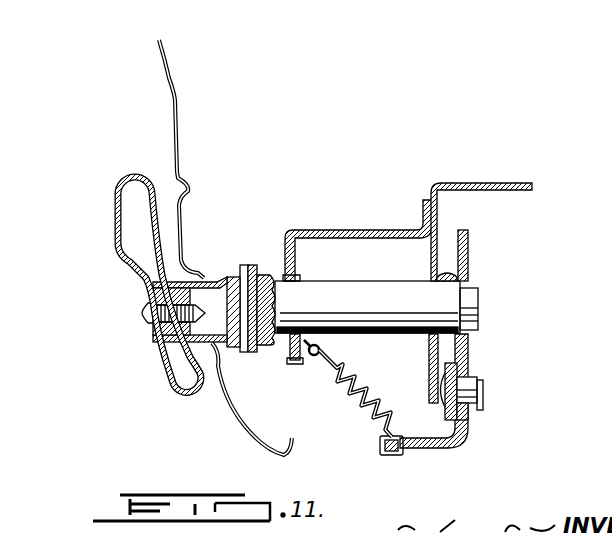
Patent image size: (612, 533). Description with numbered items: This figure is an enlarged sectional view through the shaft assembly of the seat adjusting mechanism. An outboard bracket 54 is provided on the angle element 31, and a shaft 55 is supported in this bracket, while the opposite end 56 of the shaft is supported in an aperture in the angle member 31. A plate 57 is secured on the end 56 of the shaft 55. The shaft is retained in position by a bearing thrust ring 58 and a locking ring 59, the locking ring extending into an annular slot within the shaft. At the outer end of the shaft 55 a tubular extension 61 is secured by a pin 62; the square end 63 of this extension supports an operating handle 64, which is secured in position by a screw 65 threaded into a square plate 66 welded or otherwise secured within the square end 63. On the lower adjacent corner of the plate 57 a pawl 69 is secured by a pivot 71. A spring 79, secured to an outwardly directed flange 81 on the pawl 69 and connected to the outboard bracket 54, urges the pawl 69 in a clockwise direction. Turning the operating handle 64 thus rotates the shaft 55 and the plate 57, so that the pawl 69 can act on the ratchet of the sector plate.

The angle element 31 is at (433, 189).
The outboard bracket 54 is at (363, 230).
The shaft 55 is at (345, 338).
The opposite end of the shaft 56 is at (445, 292).
The plate 57 is at (470, 231).
The bearing thrust ring 58 is at (445, 278).
The locking ring 59 is at (413, 347).
The tubular extension 61 is at (203, 278).
The pin 62 is at (262, 270).
The square end 63 is at (186, 268).
The operating handle 64 is at (117, 225).
The screw 65 is at (144, 314).
The square plate 66 is at (158, 328).
The pawl 69 is at (462, 437).
The pivot 71 is at (484, 389).
The spring 79 is at (350, 392).
The outwardly directed flange 81 is at (412, 455).